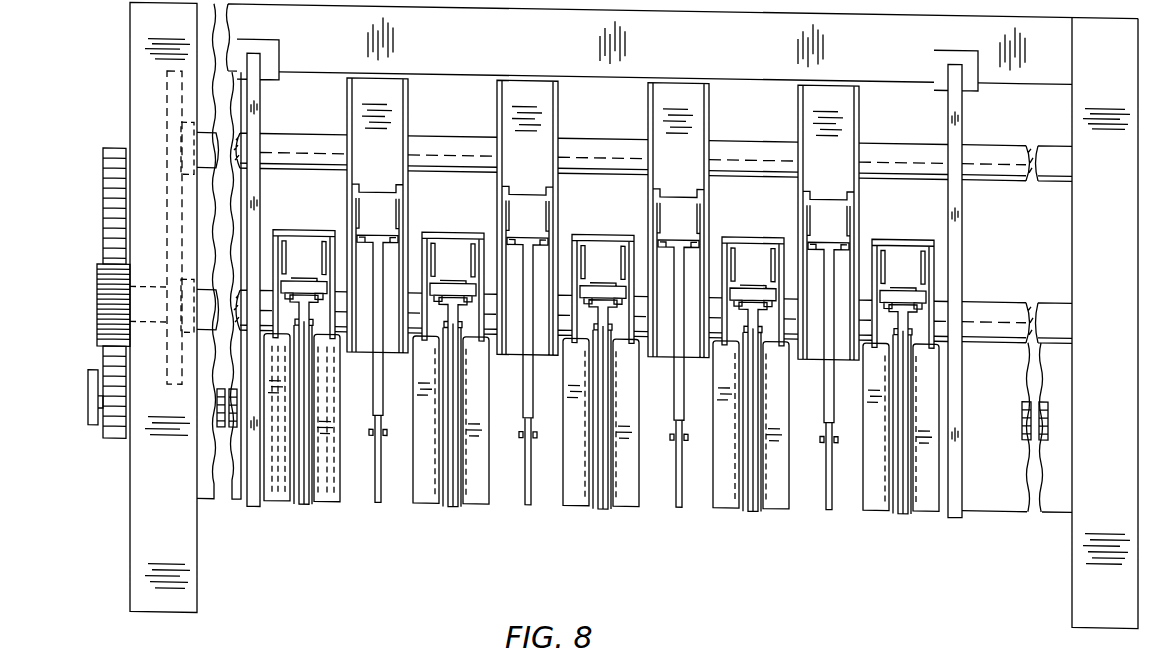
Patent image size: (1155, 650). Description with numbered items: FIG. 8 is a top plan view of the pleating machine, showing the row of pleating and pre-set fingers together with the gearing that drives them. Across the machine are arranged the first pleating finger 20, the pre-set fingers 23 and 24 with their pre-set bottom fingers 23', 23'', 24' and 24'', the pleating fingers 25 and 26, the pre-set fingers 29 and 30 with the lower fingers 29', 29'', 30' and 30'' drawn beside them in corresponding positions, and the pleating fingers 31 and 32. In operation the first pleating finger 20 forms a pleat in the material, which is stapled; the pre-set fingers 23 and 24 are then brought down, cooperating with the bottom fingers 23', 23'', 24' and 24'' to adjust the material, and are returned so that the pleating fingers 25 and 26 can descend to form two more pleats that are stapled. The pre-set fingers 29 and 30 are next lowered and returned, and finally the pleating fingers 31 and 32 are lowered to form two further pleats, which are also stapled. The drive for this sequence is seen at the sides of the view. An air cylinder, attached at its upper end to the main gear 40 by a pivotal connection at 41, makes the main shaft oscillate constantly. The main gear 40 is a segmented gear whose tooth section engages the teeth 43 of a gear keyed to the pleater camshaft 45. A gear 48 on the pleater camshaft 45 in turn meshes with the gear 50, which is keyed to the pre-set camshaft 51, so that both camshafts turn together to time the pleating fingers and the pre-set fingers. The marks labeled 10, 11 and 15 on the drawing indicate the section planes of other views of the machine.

The section line 10- 10 is at (866, 80).
The section line 11- 11 is at (272, 189).
The section line 15- 15 is at (341, 76).
The first pleating finger 20 is at (600, 425).
The pre-set finger 23 is at (527, 388).
The pre-set bottom finger 23' is at (491, 421).
The pre-set bottom finger 23'' is at (562, 424).
The pre-set finger 24 is at (678, 395).
The pre-set bottom finger 24' is at (639, 430).
The pre-set bottom finger 24'' is at (716, 436).
The pleating finger 25 is at (449, 421).
The pleating finger 26 is at (752, 430).
The pre-set finger 29 is at (377, 390).
The guide block 29' is at (343, 418).
The guide block 29'' is at (412, 428).
The pre-set finger 30 is at (828, 399).
The guide block 30' is at (784, 441).
The guide block 30'' is at (865, 435).
The pleating finger 31 is at (306, 412).
The pleating finger 32 is at (907, 426).
The main gear 40 is at (103, 184).
The pivotal connection 41 is at (88, 423).
The teeth 43 is at (97, 307).
The pleater camshaft 45 is at (983, 300).
The gear 48 is at (167, 263).
The gear 50 is at (171, 101).
The pre-set camshaft 51 is at (986, 170).